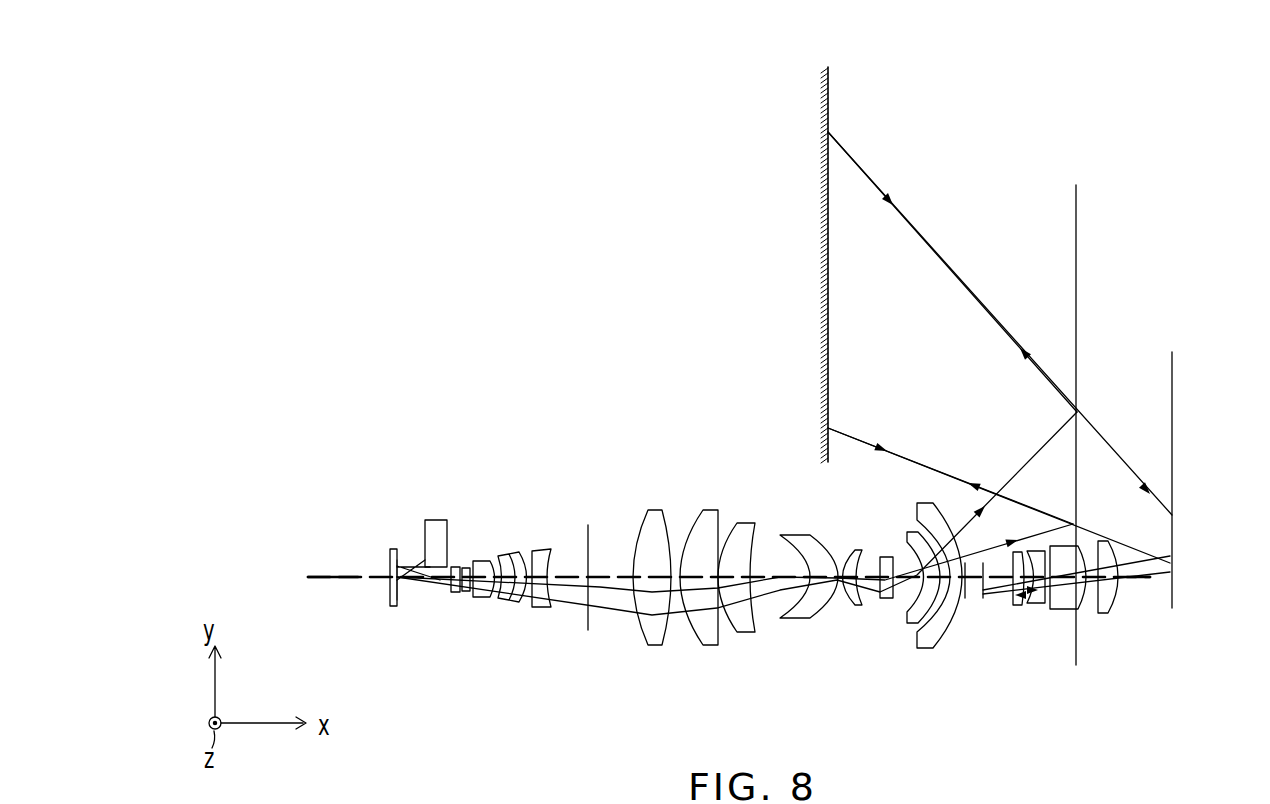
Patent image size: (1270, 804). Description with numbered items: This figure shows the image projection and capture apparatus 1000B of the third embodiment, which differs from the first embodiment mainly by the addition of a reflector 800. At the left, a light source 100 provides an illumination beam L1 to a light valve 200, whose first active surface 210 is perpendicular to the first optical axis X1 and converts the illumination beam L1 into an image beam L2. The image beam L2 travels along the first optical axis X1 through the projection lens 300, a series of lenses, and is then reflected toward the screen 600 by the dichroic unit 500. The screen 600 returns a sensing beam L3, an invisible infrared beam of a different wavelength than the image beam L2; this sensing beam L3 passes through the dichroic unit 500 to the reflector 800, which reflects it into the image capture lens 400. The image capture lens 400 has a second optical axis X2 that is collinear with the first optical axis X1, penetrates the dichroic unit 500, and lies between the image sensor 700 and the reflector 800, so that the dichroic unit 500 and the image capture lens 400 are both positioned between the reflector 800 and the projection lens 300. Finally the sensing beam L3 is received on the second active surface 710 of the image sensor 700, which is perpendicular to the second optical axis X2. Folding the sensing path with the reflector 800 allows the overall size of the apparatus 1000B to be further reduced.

The light source 100 is at (440, 527).
The light valve 200 is at (389, 602).
The first active surface 210 is at (399, 594).
The projection lens 300 is at (962, 665).
The image capture lens 400 is at (1120, 665).
The dichroic unit 500 is at (1076, 223).
The screen 600 is at (829, 102).
The image sensor 700 is at (979, 639).
The second active surface 710 is at (968, 589).
The reflector 800 is at (1173, 600).
The image projection and capture apparatus 1000B is at (1247, 750).
The illumination beam L1 is at (415, 558).
The image beam L2 is at (430, 573).
The sensing beam L3 is at (868, 170).
The first optical axis X1 is at (321, 571).
The second optical axis X2 is at (1128, 580).